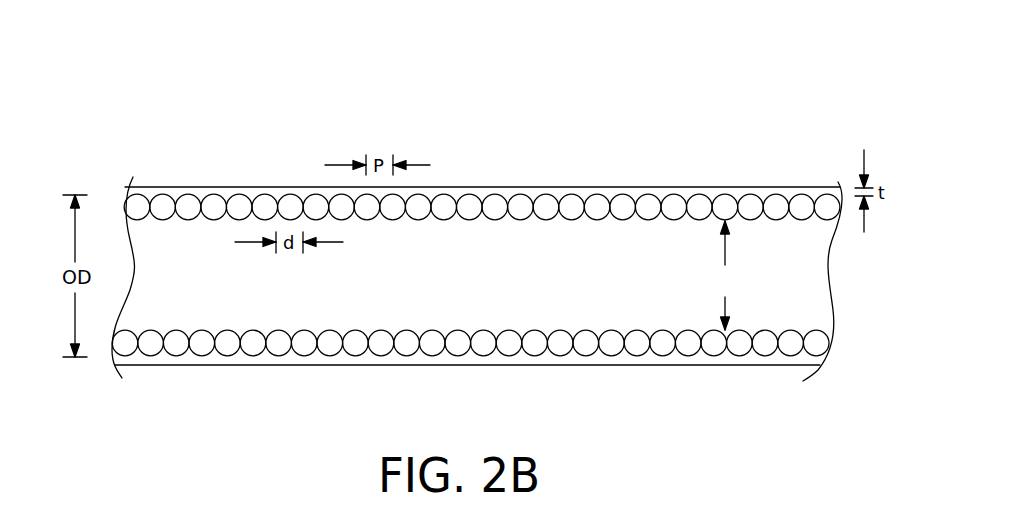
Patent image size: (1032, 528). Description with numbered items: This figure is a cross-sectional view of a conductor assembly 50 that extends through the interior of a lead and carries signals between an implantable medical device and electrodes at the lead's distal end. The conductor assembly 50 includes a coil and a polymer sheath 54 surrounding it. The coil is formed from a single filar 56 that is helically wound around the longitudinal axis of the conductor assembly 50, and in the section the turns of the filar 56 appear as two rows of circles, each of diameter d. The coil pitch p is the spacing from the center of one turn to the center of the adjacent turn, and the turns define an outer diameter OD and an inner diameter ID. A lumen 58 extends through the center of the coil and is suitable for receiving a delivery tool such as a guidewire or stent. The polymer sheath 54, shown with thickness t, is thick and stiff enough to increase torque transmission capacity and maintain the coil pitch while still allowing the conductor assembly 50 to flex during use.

The conductor assembly 50 is at (782, 120).
The polymer sheath 54 is at (215, 187).
The filar 56 is at (542, 205).
The lumen 58 is at (447, 292).